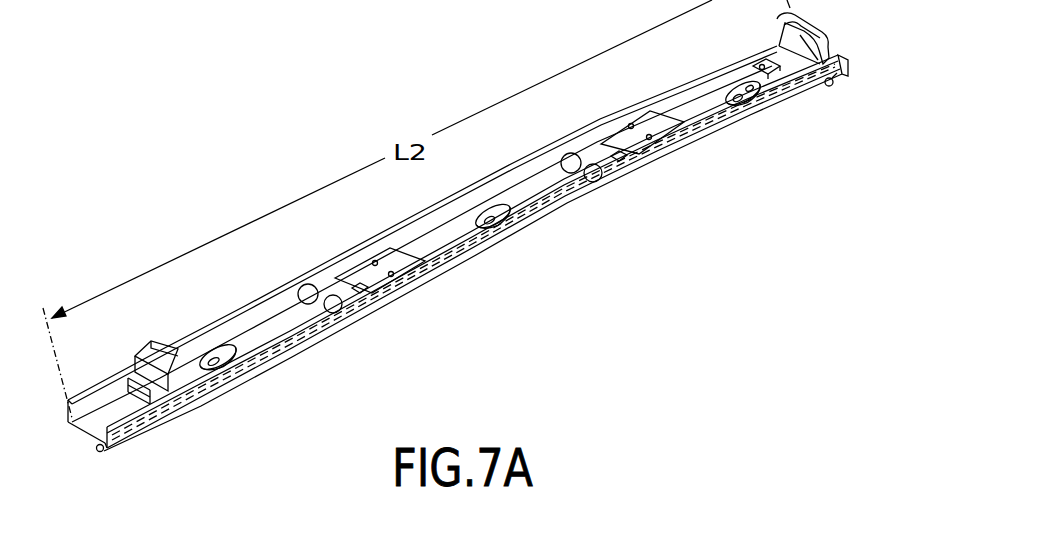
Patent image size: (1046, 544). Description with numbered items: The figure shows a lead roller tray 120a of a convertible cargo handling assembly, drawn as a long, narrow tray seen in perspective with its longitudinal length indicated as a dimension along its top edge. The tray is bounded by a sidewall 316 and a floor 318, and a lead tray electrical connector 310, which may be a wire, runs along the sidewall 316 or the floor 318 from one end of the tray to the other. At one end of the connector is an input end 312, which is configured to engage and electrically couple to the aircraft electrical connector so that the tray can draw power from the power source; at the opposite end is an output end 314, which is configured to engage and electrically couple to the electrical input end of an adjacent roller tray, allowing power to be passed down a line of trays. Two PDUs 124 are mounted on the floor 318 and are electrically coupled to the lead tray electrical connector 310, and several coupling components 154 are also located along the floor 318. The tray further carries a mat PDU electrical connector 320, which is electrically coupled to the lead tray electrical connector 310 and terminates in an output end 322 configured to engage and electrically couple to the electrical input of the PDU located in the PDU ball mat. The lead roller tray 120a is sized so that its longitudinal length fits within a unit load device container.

The lead roller tray 120a is at (272, 179).
The PDU 124 is at (357, 269).
The coupling component 154 is at (213, 349).
The lead tray electrical connector 310 is at (732, 135).
The input end 312 is at (836, 86).
The output end 314 is at (102, 453).
The sidewall 316 is at (836, 60).
The floor 318 is at (693, 117).
The mat PDU electrical connector 320 is at (497, 250).
The output end 322 is at (503, 252).